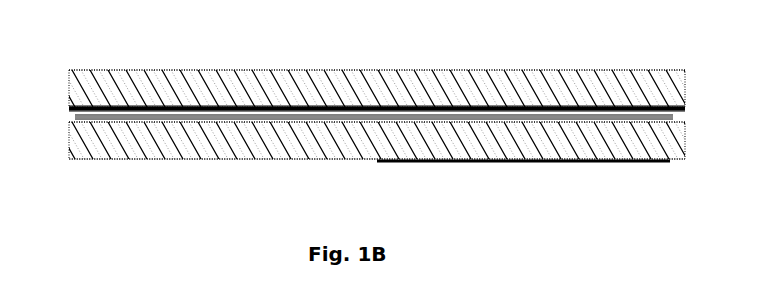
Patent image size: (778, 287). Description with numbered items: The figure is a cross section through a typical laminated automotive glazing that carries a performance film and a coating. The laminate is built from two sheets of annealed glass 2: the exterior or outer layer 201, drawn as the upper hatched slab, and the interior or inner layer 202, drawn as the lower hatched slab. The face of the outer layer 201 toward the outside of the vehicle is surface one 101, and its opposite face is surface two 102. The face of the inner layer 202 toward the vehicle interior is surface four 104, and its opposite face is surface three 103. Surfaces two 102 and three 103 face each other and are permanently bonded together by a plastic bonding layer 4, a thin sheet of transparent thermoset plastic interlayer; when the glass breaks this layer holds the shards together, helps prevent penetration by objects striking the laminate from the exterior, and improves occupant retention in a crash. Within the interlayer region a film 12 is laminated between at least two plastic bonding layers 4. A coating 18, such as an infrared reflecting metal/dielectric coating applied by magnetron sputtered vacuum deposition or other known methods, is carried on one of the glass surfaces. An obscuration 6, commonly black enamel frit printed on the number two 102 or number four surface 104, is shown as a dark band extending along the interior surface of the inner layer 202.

The annealed glass 2 is at (670, 68).
The outer glass layer 201 is at (68, 85).
The inner glass layer 202 is at (68, 137).
The plastic bonding layer 4 is at (172, 104).
The film 12 is at (365, 122).
The obscuration 6 is at (483, 168).
The coating 18 is at (458, 103).
The surface one 101 is at (210, 67).
The surface two 102 is at (345, 103).
The surface three 103 is at (340, 128).
The surface four 104 is at (242, 162).